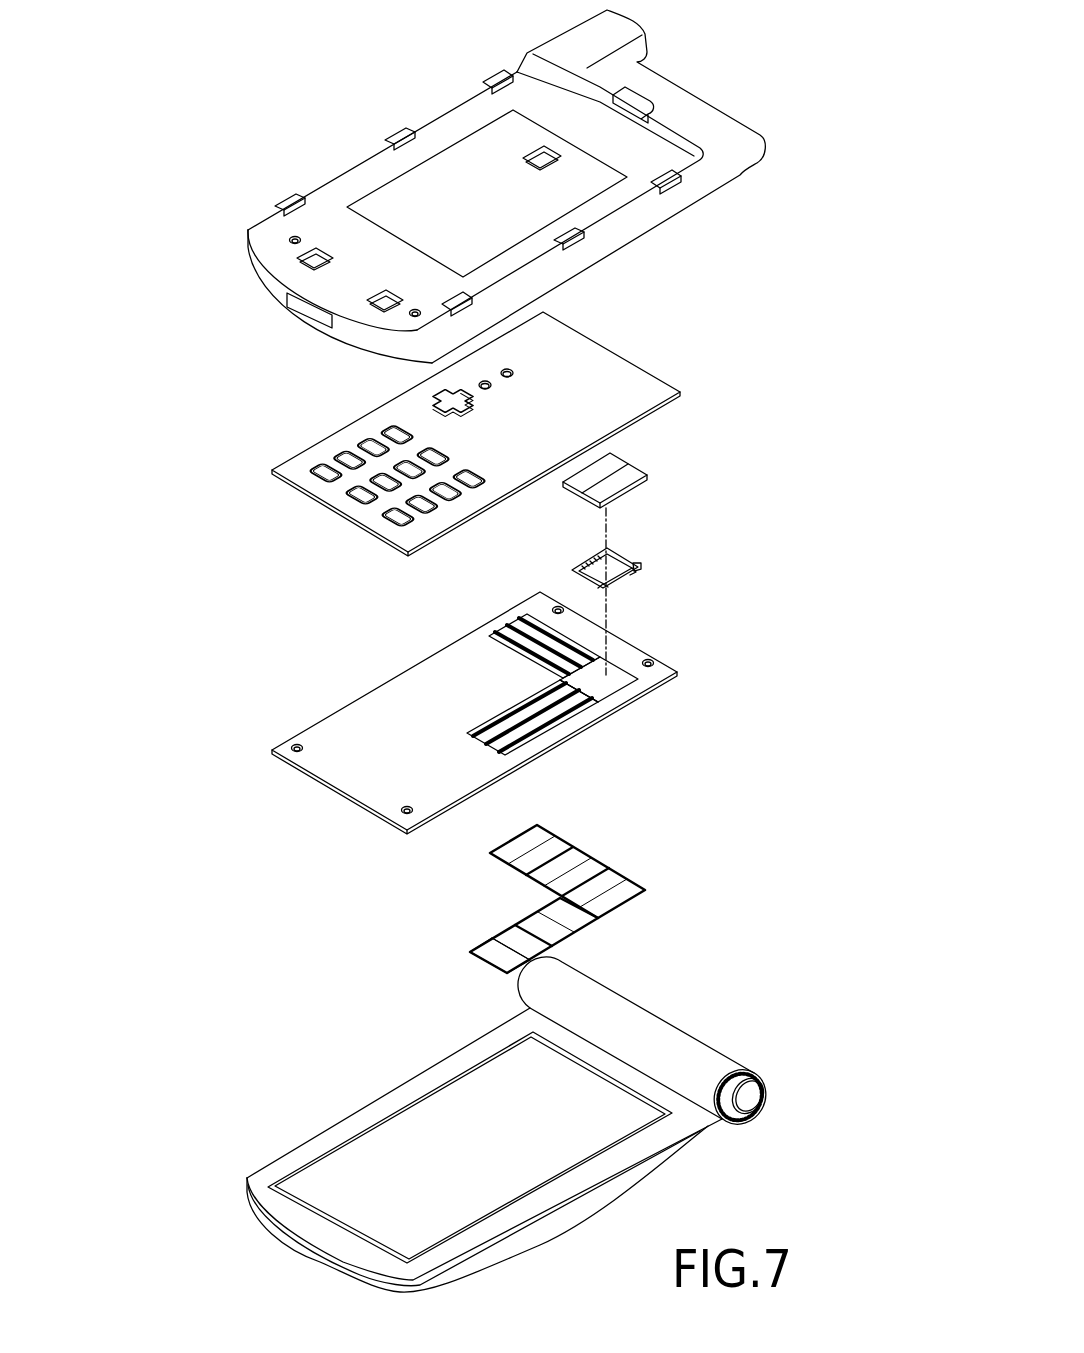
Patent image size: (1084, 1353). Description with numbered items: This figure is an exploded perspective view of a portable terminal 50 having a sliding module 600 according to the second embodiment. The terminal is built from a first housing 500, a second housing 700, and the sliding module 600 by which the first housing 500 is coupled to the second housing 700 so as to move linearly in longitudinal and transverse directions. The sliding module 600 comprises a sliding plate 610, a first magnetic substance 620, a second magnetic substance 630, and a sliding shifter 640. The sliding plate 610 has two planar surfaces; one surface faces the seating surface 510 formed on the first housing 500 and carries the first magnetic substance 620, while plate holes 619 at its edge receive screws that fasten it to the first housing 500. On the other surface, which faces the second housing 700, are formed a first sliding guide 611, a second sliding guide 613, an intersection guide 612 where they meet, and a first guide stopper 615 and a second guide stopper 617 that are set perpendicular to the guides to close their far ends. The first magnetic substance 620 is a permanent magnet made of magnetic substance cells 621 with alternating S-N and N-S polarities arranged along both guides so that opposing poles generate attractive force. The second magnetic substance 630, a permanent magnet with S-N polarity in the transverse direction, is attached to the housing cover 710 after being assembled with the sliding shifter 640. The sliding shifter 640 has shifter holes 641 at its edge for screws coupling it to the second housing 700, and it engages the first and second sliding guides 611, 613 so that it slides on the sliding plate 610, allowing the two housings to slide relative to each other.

The portable terminal 50 is at (240, 62).
The second housing 700 is at (410, 98).
The housing cover 710 is at (590, 355).
The sliding module 600 is at (771, 659).
The sliding plate 610 is at (372, 687).
The first sliding guide 611 is at (562, 722).
The intersection guide 612 is at (620, 665).
The second sliding guide 613 is at (522, 623).
The first guide stopper 615 is at (485, 745).
The second guide stopper 617 is at (495, 628).
The plate holes 619 is at (296, 753).
The first magnetic substance 620 is at (572, 830).
The magnetic substance cells 621 is at (595, 858).
The second magnetic substance 630 is at (642, 463).
The sliding shifter 640 is at (626, 548).
The shifter holes 641 is at (640, 566).
The first housing 500 is at (695, 1015).
The seating surface 510 is at (350, 1218).